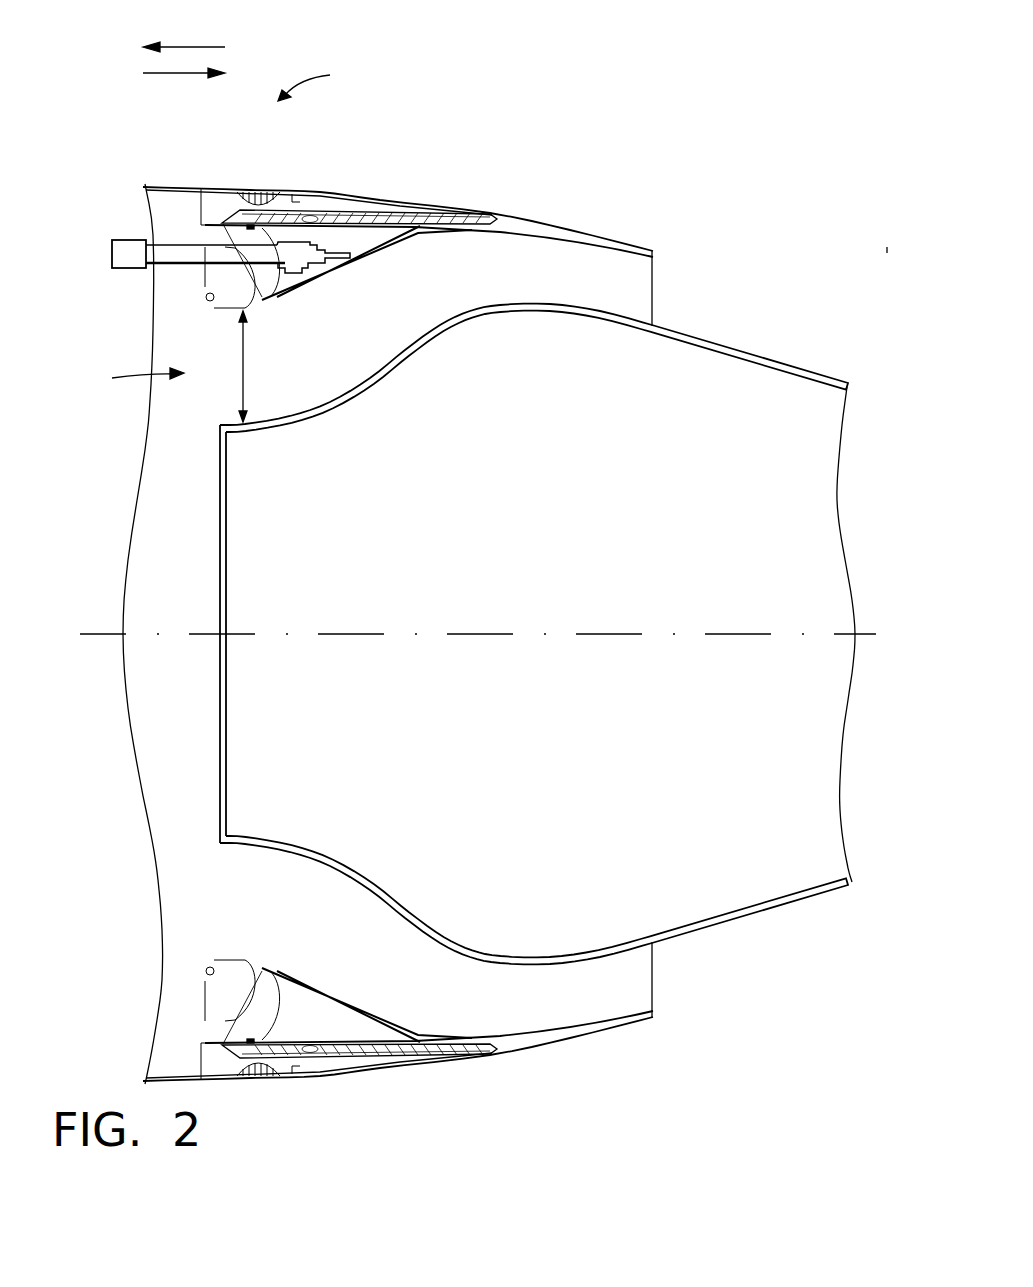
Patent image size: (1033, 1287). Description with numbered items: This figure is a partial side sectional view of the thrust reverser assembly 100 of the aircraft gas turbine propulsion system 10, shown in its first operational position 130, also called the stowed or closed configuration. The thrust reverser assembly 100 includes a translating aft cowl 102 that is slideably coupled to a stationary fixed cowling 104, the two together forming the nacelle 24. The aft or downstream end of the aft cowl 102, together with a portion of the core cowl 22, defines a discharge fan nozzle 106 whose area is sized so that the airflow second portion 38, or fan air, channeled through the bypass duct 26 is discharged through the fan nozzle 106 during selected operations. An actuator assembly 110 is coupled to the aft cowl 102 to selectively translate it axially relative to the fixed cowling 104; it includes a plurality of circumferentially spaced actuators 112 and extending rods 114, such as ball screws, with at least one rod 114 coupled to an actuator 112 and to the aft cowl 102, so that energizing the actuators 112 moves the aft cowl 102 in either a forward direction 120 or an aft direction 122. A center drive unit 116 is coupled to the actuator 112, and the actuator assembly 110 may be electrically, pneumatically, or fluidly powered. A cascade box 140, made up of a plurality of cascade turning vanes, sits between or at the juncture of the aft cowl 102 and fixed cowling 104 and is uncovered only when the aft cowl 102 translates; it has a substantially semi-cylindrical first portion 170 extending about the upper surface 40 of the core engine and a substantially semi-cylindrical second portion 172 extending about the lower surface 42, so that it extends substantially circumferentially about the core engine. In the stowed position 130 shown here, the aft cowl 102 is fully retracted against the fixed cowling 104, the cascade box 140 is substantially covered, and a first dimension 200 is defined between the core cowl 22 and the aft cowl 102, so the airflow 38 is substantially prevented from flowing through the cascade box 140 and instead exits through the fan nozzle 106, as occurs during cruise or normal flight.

The aircraft gas turbine propulsion system 10 is at (678, 120).
The core cowl 22 is at (768, 352).
The nacelle 24 is at (319, 81).
The bypass duct 26 is at (335, 364).
The airflow second portion 38 is at (135, 382).
The upper surface 40 is at (500, 304).
The lower surface 42 is at (402, 915).
The thrust reverser assembly 100 is at (410, 66).
The translating aft cowl 102 is at (468, 207).
The stationary fixed cowling 104 is at (155, 205).
The discharge fan nozzle 106 is at (655, 286).
The actuator assembly 110 is at (146, 191).
The actuator 112 is at (295, 263).
The extending rod 114 is at (338, 262).
The center drive unit 116 is at (128, 272).
The forward direction 120 is at (188, 46).
The aft direction 122 is at (168, 76).
The first operational position 130 is at (204, 170).
The cascade box 140 is at (355, 200).
The first portion 170 is at (318, 160).
The second portion 172 is at (427, 1085).
The first dimension 200 is at (242, 356).